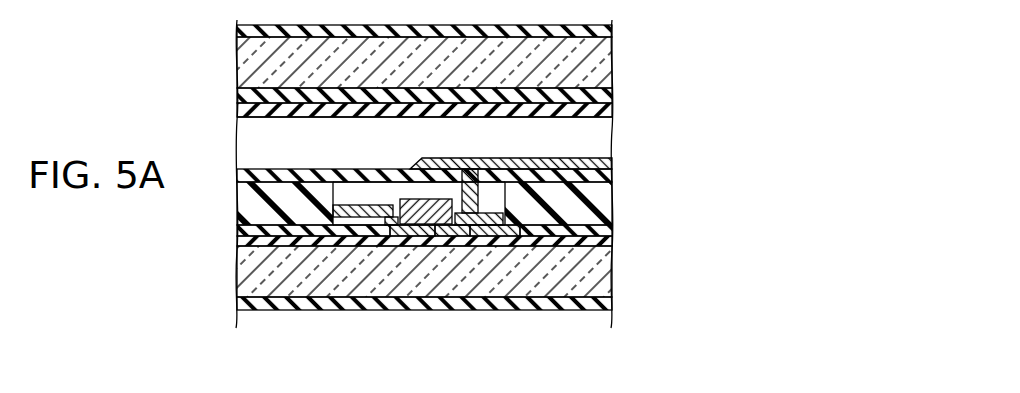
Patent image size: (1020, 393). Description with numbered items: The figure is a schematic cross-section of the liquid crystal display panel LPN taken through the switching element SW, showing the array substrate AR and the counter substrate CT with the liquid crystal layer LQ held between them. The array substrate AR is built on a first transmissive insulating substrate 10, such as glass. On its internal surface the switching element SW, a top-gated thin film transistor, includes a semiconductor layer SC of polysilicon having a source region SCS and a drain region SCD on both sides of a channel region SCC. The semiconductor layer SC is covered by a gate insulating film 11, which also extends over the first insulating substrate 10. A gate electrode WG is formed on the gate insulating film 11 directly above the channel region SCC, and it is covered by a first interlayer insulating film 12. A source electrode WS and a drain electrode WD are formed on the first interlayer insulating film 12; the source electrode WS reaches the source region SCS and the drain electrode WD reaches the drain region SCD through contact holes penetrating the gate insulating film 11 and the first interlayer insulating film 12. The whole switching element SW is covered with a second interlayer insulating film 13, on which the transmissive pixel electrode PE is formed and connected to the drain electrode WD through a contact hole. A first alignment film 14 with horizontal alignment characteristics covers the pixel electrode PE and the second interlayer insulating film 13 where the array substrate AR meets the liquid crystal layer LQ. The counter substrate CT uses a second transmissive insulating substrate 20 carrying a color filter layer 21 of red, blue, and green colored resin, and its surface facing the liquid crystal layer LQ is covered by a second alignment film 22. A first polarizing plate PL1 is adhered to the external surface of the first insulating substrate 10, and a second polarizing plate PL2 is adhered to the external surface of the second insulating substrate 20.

The liquid crystal display panel LPN is at (704, 69).
The counter substrate CT is at (236, 65).
The array substrate AR is at (236, 276).
The second polarizing plate PL2 is at (612, 30).
The second insulating substrate 20 is at (612, 66).
The color filter layer 21 is at (612, 92).
The second alignment film 22 is at (612, 112).
The liquid crystal layer LQ is at (612, 142).
The pixel electrode PE is at (612, 180).
The first alignment film 14 is at (612, 166).
The second interlayer insulating film 13 is at (612, 208).
The first interlayer insulating film 12 is at (612, 232).
The gate insulating film 11 is at (612, 246).
The first insulating substrate 10 is at (605, 276).
The first polarizing plate PL1 is at (612, 303).
The switching element SW is at (404, 243).
The source electrode WS is at (365, 205).
The gate electrode WG is at (415, 199).
The drain electrode WD is at (470, 180).
The semiconductor layer SC is at (451, 307).
The source region SCS is at (397, 246).
The channel region SCC is at (420, 246).
The drain region SCD is at (502, 288).